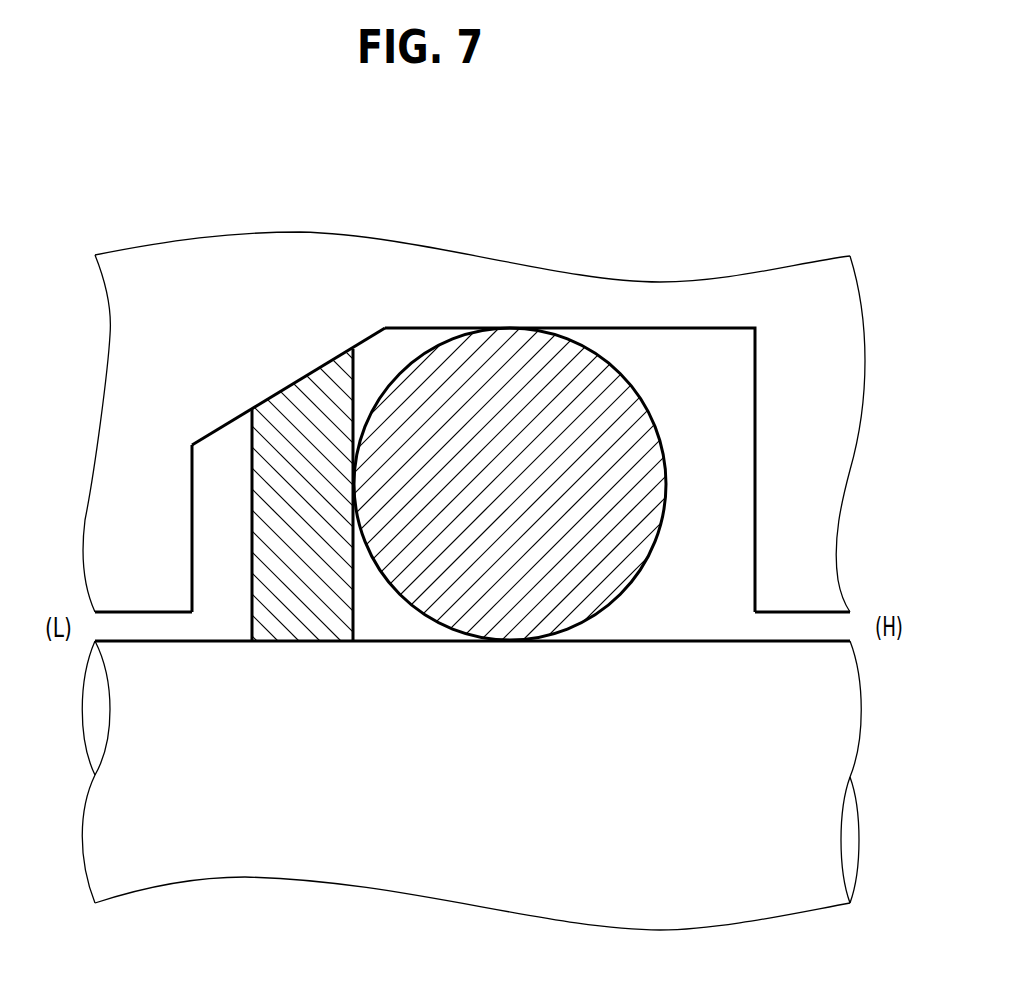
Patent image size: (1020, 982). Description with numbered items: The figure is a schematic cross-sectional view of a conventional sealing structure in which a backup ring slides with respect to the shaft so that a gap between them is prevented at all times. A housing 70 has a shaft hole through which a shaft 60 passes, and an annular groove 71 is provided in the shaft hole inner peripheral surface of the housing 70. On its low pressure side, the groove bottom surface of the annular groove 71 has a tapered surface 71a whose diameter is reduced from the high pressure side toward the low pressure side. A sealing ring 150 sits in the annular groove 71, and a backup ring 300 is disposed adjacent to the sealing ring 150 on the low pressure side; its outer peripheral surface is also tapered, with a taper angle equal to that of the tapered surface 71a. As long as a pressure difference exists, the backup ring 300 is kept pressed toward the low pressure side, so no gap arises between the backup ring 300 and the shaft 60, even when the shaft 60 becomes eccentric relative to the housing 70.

The shaft 60 is at (838, 780).
The housing 70 is at (853, 372).
The annular groove 71 is at (757, 540).
The tapered surface 71a is at (205, 432).
The sealing ring 150 is at (530, 340).
The backup ring 300 is at (323, 383).